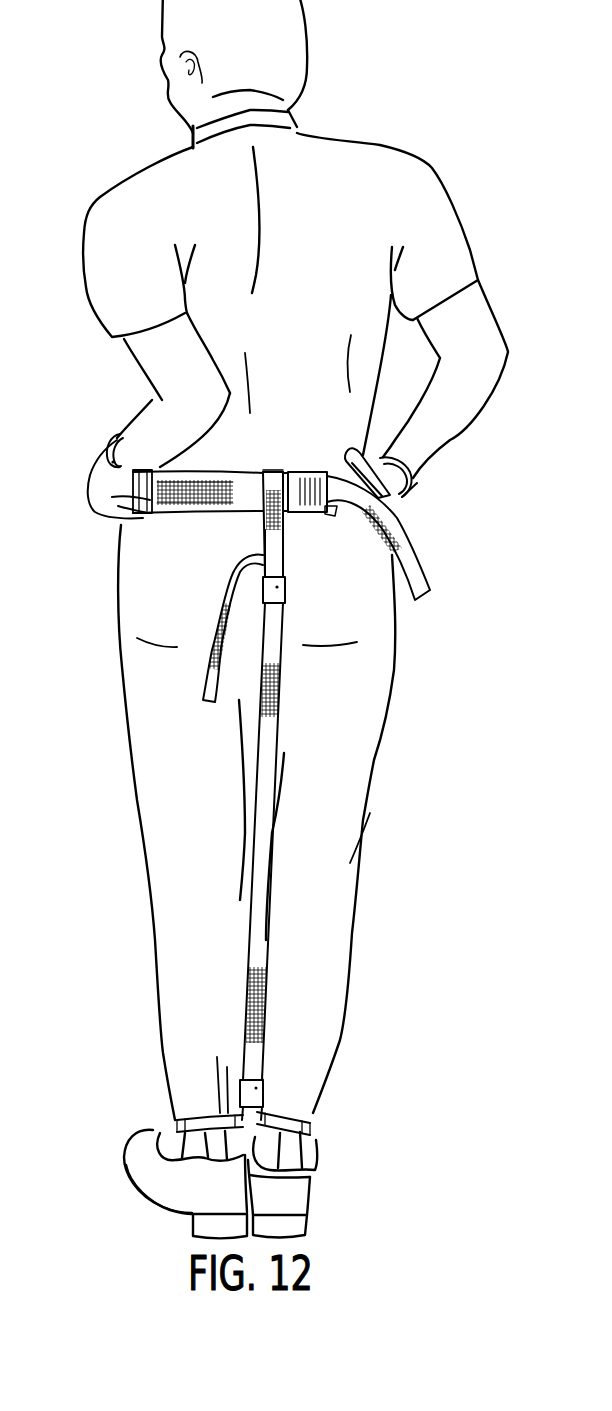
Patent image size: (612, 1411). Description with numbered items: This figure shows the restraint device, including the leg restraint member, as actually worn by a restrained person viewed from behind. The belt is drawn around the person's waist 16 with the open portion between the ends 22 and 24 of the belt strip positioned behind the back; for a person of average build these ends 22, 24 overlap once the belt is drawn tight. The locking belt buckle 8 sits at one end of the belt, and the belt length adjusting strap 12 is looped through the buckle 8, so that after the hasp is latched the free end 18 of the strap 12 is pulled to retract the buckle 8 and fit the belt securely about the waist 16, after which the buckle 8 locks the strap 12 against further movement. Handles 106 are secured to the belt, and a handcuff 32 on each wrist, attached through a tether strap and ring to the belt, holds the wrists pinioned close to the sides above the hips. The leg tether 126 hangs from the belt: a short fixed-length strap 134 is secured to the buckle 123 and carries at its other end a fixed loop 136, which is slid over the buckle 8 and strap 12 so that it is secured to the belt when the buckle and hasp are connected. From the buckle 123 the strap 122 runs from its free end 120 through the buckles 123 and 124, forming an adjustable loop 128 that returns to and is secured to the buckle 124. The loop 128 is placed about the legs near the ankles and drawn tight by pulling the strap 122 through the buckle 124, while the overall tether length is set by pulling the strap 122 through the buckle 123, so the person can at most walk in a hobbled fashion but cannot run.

The locking belt buckle 8 is at (303, 497).
The belt length adjusting strap 12 is at (240, 483).
The waist 16 is at (307, 463).
The free end 18 is at (427, 595).
The end 22 is at (333, 510).
The end 24 is at (187, 513).
The handcuff 32 is at (110, 447).
The handle 106 is at (353, 450).
The free end 120 is at (203, 690).
The strap 122 is at (278, 680).
The buckle 123 is at (285, 600).
The buckle 124 is at (263, 1097).
The leg tether 126 is at (283, 735).
The loop 128 is at (175, 1120).
The strap 134 is at (275, 552).
The loop 136 is at (267, 470).